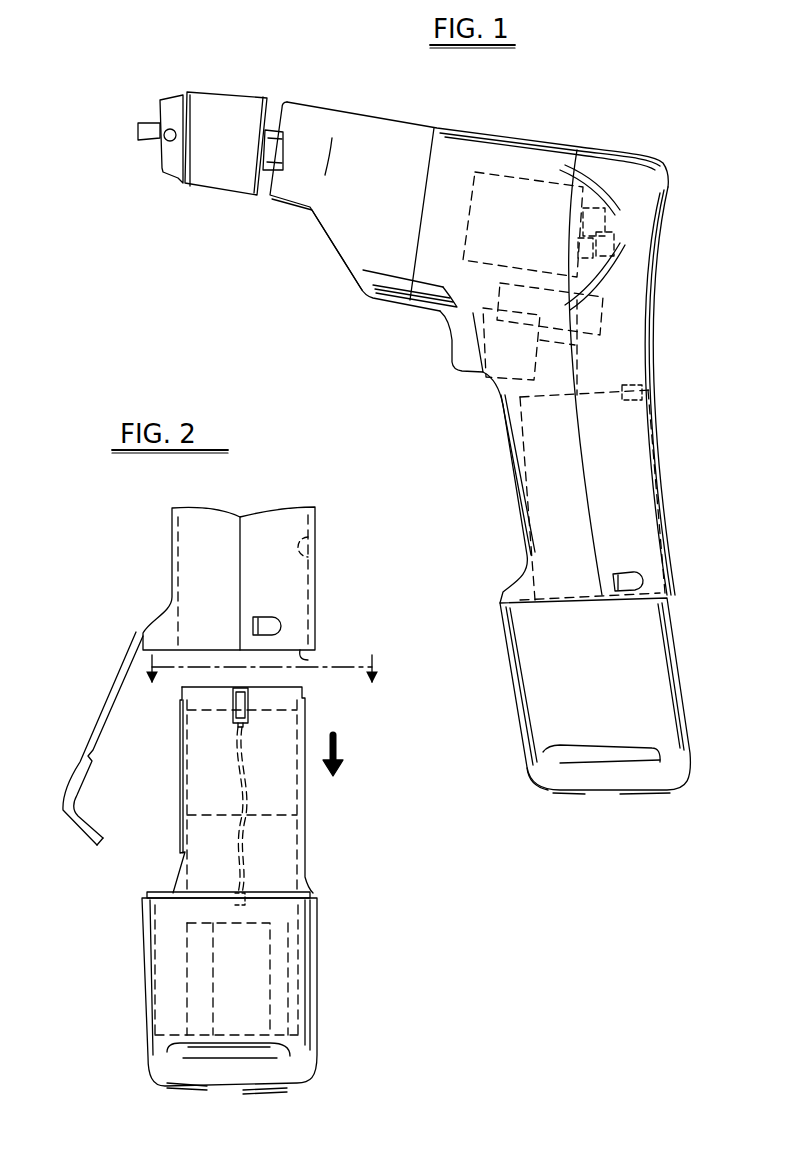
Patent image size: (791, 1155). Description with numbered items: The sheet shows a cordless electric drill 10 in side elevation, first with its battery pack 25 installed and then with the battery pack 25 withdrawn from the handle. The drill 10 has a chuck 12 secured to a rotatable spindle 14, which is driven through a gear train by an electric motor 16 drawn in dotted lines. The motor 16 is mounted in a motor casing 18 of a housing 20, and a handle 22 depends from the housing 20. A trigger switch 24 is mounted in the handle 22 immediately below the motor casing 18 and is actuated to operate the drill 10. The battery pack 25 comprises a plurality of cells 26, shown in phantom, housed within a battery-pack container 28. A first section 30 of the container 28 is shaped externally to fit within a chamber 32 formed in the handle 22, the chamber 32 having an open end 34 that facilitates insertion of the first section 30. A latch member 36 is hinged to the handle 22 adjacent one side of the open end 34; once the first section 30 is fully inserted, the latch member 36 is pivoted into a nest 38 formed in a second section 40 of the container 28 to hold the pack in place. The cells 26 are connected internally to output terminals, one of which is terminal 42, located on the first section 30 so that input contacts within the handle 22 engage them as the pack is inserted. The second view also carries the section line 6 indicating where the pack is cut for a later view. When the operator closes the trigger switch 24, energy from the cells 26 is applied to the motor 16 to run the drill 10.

In FIG. 1, the electric drill 10 is at (662, 150).
In FIG. 1, the chuck 12 is at (222, 120).
In FIG. 1, the rotatable spindle 14 is at (275, 143).
In FIG. 1, the electric motor 16 is at (497, 190).
In FIG. 1, the motor casing 18 is at (448, 148).
In FIG. 1, the housing 20 is at (553, 139).
In FIG. 1, the handle 22 is at (517, 488).
In FIG. 2, the handle 22 is at (172, 547).
In FIG. 1, the trigger switch 24 is at (508, 350).
In FIG. 1, the battery pack 25 is at (509, 707).
In FIG. 2, the battery pack 25 is at (320, 966).
In FIG. 2, the cells 26 is at (285, 797).
In FIG. 1, the battery-pack container 28 is at (682, 625).
In FIG. 2, the battery-pack container 28 is at (318, 875).
In FIG. 1, the first section 30 is at (625, 502).
In FIG. 2, the first section 30 is at (302, 727).
In FIG. 2, the chamber 32 is at (322, 533).
In FIG. 2, the open end 34 is at (305, 652).
In FIG. 1, the latch member 36 is at (535, 791).
In FIG. 2, the latch member 36 is at (107, 710).
In FIG. 2, the nest 38 is at (150, 960).
In FIG. 1, the second section 40 is at (667, 714).
In FIG. 2, the second section 40 is at (290, 1074).
In FIG. 1, the output contact or terminal 42 is at (587, 418).
In FIG. 2, the output contact or terminal 42 is at (238, 702).
In FIG. 2, the section line 6- 6 is at (262, 684).